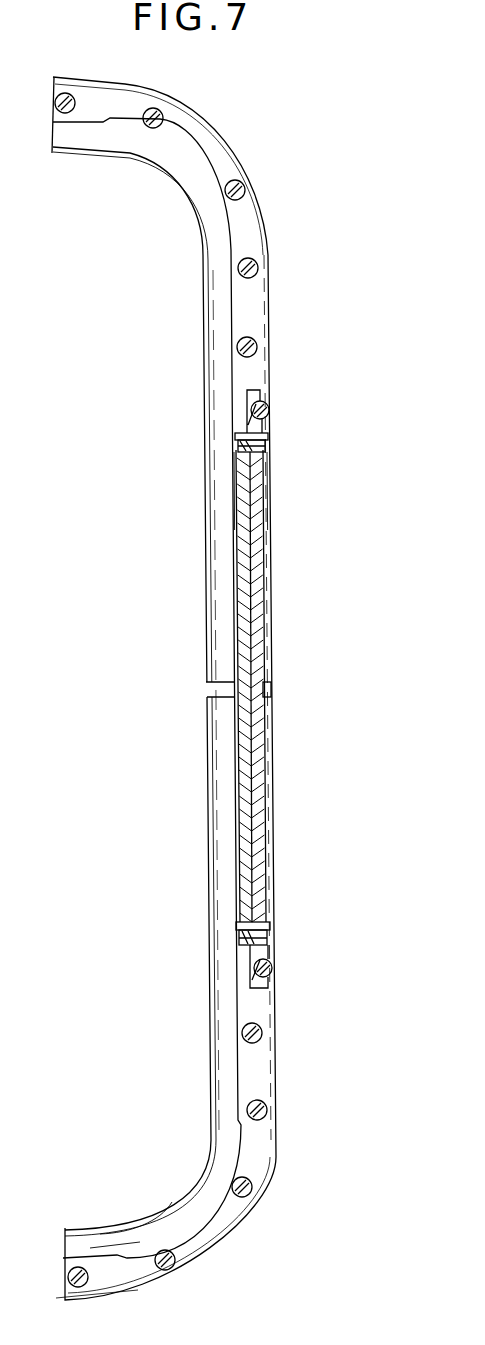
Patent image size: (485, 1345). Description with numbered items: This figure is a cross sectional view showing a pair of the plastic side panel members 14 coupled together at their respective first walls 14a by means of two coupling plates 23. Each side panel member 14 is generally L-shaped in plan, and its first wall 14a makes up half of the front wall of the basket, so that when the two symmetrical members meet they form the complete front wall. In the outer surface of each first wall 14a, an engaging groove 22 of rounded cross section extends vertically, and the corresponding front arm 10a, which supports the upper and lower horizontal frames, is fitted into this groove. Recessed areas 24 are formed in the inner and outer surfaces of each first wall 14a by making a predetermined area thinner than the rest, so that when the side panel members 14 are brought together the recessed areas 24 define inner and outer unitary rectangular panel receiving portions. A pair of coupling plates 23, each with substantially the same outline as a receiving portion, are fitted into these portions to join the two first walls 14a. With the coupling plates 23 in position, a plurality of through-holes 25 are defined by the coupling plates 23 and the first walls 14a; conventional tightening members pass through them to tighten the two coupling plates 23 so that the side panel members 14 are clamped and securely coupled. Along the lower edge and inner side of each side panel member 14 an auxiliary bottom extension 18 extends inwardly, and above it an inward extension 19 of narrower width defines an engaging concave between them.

The side panel member 14 is at (242, 145).
The first wall 14a is at (256, 552).
The front arm 10a is at (258, 399).
The engaging groove 22 is at (270, 410).
The through-hole 25 is at (270, 452).
The recessed area 24 is at (243, 498).
The coupling plate 23 is at (237, 597).
The auxiliary bottom extension 18 is at (172, 1202).
The inward extension 19 is at (140, 1242).